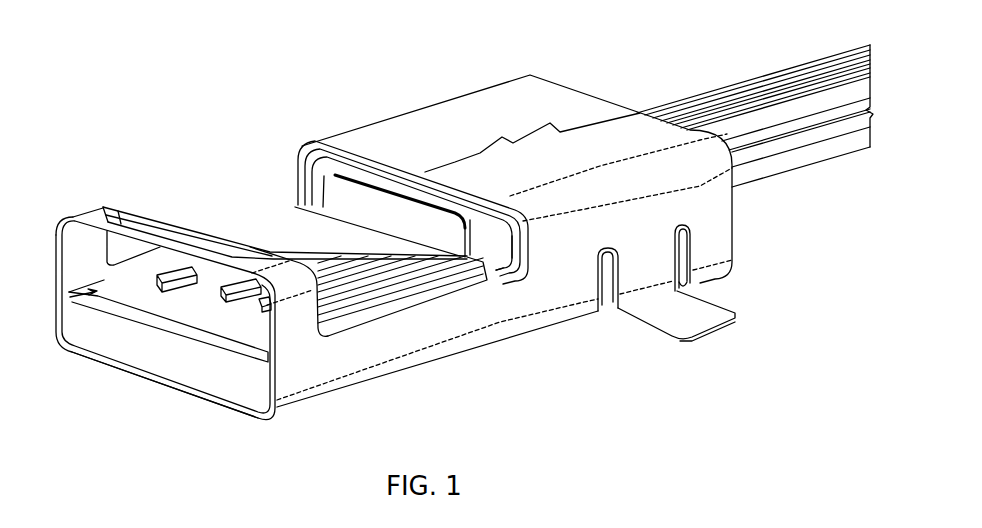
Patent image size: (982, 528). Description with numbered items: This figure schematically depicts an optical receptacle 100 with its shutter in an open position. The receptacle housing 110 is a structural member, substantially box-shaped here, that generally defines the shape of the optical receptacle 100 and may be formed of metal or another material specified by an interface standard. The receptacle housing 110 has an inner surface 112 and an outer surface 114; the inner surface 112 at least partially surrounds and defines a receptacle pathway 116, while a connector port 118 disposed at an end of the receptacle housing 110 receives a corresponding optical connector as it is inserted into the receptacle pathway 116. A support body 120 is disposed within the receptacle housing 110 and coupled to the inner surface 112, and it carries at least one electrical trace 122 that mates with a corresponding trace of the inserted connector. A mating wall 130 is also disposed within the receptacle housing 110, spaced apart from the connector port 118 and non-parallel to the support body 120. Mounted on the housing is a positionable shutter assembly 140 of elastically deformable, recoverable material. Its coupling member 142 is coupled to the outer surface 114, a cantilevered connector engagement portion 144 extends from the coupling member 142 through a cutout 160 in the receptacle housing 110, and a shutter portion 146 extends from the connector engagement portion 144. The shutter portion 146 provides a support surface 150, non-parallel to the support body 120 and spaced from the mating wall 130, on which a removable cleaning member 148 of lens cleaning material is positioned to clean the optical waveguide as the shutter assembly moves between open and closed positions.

The optical receptacle 100 is at (101, 122).
The receptacle housing 110 is at (404, 106).
The inner surface 112 is at (74, 254).
The outer surface 114 is at (297, 377).
The receptacle pathway 116 is at (82, 303).
The connector port 118 is at (237, 403).
The support body 120 is at (172, 360).
The electrical trace 122 is at (188, 284).
The mating wall 130 is at (468, 204).
The positionable shutter assembly 140 is at (283, 199).
The coupling member 142 is at (121, 209).
The connector engagement portion 144 is at (188, 210).
The shutter portion 146 is at (332, 185).
The cleaning member 148 is at (472, 232).
The support surface 150 is at (474, 264).
The cutout 160 is at (425, 295).